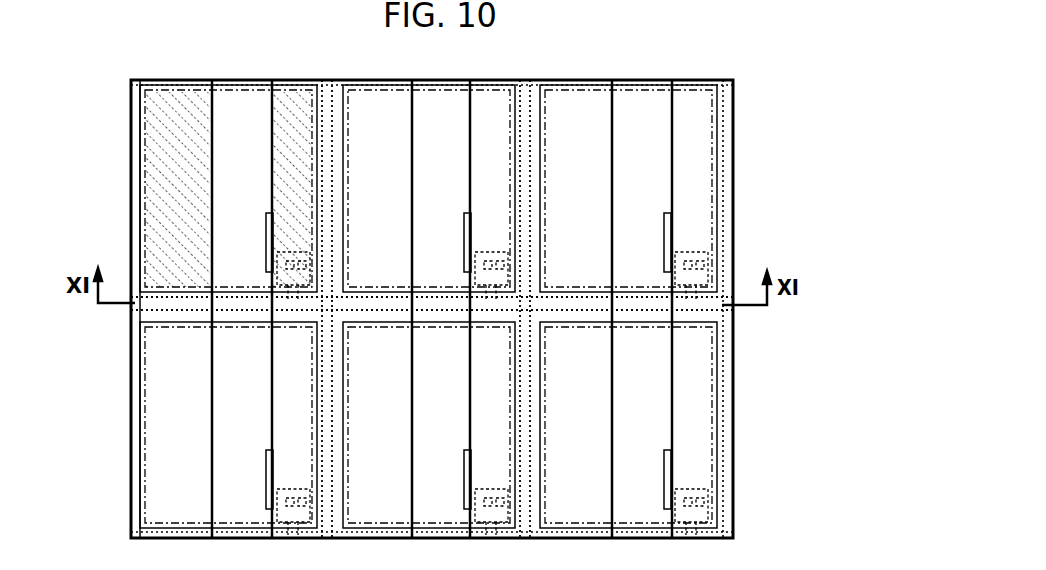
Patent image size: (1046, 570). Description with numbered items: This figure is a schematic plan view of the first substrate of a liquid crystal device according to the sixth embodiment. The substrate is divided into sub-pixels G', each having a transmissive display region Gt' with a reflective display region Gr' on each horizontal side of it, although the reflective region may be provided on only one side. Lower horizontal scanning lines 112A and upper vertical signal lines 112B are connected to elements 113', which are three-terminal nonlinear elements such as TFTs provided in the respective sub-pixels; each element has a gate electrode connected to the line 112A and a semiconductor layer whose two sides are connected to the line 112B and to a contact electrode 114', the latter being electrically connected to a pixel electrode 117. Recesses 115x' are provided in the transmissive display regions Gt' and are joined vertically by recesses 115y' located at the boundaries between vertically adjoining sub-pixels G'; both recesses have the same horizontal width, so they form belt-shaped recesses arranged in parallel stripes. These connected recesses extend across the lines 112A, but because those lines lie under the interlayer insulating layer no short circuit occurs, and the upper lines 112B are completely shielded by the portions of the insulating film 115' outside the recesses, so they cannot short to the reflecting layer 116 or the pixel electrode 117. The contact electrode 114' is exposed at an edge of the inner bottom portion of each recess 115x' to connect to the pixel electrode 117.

The reflecting layer 116 is at (140, 112).
The upper vertical line 112B is at (340, 118).
The lower horizontal line 112A is at (175, 313).
The element 113' is at (537, 376).
The source electrode 114' is at (468, 390).
The insulating film 115' is at (464, 309).
The recess 115x' is at (421, 309).
The recess 115y' is at (466, 324).
The pixel electrode 117 is at (143, 452).
The sub-pixel G' is at (181, 189).
The reflective display region Gr' is at (146, 189).
The transmissive display region Gt' is at (197, 189).